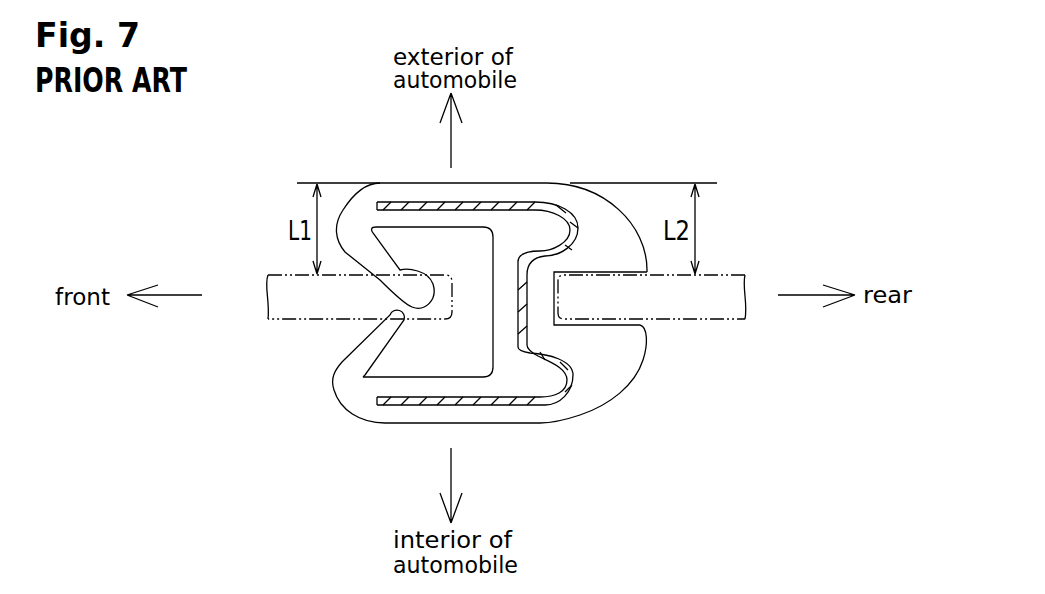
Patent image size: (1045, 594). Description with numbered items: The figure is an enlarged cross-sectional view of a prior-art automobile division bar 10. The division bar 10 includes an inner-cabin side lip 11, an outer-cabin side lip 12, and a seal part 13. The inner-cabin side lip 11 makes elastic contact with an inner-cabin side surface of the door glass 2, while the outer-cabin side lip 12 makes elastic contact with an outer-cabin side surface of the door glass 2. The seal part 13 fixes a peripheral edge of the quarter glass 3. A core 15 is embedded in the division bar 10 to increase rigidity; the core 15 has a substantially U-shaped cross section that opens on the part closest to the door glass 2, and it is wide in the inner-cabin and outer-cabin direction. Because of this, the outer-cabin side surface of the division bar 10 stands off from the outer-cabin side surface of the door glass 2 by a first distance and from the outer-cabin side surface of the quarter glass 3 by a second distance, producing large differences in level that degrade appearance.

The door glass 2 is at (283, 275).
The quarter glass 3 is at (725, 275).
The division bar 10 is at (477, 308).
The inner-cabin side lip 11 is at (351, 350).
The outer-cabin side lip 12 is at (365, 257).
The seal part 13 is at (620, 348).
The core 15 is at (479, 407).